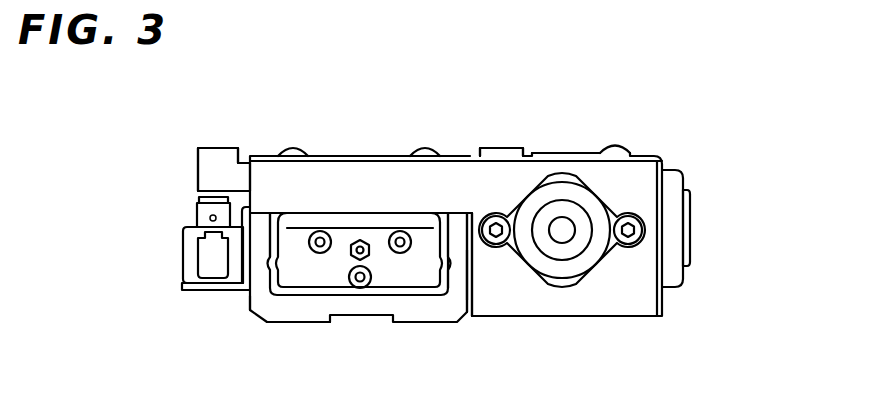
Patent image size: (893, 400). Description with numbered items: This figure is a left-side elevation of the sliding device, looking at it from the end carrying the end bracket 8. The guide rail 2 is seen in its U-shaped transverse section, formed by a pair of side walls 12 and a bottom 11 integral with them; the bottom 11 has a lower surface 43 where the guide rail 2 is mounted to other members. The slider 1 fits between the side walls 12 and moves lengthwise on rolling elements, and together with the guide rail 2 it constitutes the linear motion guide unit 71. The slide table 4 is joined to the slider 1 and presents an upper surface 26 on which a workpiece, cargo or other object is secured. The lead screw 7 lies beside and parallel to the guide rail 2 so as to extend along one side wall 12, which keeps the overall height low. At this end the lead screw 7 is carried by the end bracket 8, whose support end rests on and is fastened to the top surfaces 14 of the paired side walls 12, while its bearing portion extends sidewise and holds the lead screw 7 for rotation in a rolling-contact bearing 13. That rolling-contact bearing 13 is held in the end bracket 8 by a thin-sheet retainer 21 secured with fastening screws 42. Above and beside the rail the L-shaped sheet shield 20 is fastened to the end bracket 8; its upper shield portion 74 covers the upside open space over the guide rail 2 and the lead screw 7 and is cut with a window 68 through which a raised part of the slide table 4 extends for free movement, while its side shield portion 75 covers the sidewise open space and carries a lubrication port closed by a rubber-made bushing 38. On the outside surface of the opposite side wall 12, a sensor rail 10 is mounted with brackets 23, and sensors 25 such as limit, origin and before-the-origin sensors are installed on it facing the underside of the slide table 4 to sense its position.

The slider 1 is at (395, 277).
The guide rail 2 is at (438, 308).
The slide table 4 is at (507, 157).
The lead screw 7 is at (567, 235).
The end bracket 8 is at (638, 290).
The sensor rail 10 is at (192, 247).
The bottom 11 is at (343, 305).
The side wall 12 is at (470, 212).
The rolling-contact bearing 13 is at (597, 217).
The top surface 14 is at (454, 213).
The shield 20 is at (670, 207).
The retainer 21 is at (603, 197).
The bracket 23 is at (208, 288).
The sensor 25 is at (200, 213).
The upper surface 26 is at (220, 147).
The rubber-made bushing 38 is at (665, 217).
The fastening screw 42 is at (645, 229).
The lower surface 43 is at (290, 321).
The window 68 is at (457, 230).
The linear motion guide unit 71 is at (243, 302).
The upper shield portion 74 is at (566, 154).
The side shield portion 75 is at (665, 267).